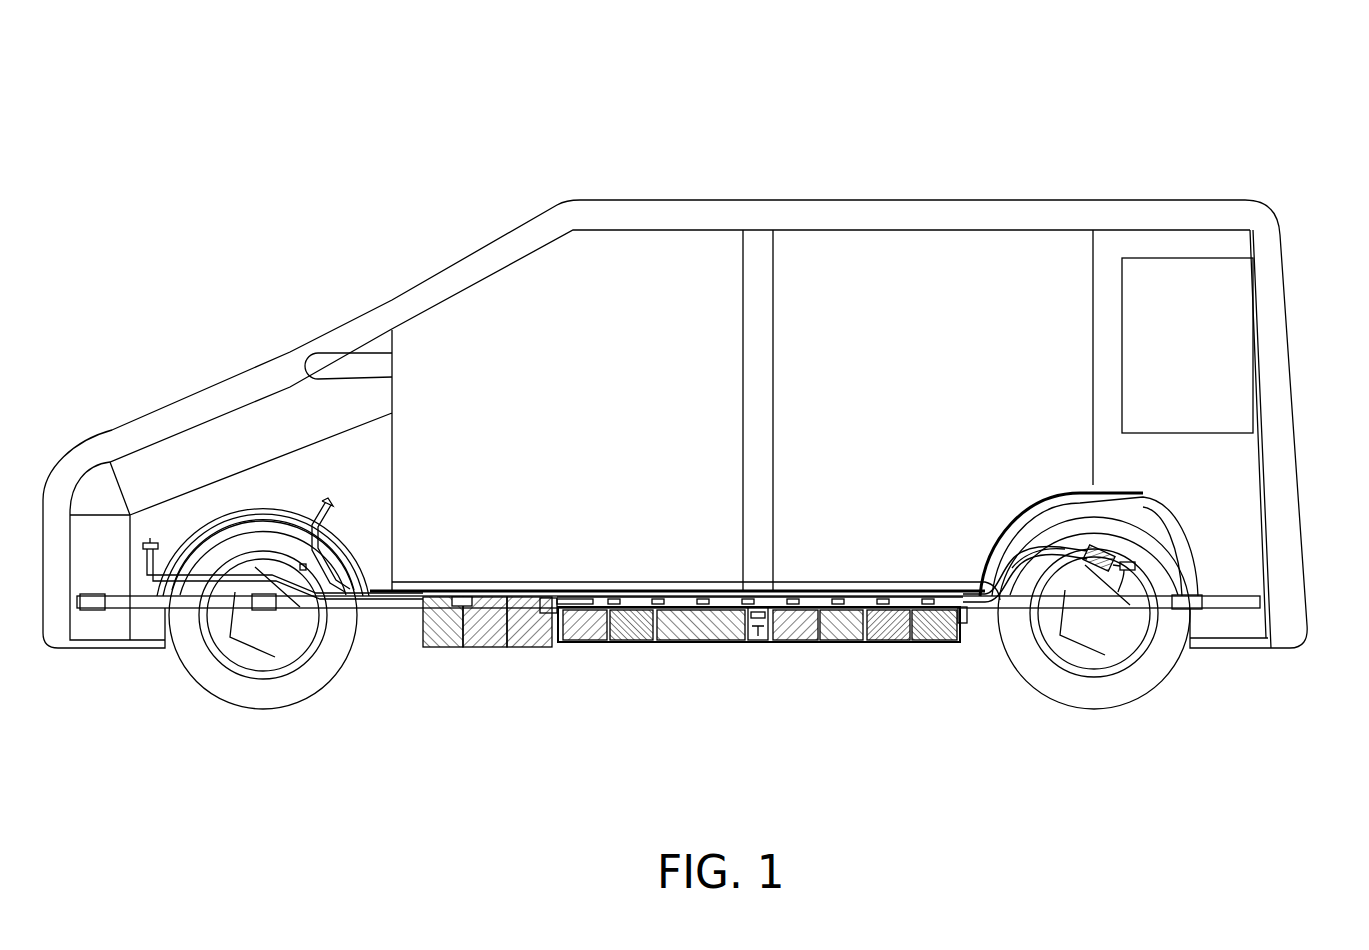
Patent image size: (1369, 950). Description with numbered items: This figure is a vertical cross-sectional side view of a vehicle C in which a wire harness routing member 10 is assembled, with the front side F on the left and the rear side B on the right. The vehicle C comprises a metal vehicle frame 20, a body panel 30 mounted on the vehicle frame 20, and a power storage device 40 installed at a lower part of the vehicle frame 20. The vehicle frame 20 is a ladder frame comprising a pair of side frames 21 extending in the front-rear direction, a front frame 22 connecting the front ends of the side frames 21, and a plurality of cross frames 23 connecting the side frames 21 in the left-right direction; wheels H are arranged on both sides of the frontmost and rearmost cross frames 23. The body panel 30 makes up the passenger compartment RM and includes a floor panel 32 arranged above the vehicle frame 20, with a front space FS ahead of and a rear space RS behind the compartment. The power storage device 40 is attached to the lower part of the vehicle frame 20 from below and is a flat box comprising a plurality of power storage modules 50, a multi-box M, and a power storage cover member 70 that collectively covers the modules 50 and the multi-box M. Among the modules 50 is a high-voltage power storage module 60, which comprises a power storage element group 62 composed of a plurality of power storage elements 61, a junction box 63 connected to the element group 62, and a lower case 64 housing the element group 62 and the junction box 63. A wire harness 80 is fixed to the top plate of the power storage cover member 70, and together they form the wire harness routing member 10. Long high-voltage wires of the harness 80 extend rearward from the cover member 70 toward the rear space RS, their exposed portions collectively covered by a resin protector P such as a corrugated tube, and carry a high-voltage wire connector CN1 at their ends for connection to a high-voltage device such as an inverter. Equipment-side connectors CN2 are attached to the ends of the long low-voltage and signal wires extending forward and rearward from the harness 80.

The wire harness routing member 10 is at (679, 608).
The vehicle frame 20 is at (147, 612).
The side frame 21 is at (288, 604).
The front frame 22 is at (88, 612).
The cross frame 23 is at (1183, 612).
The body panel 30 is at (675, 388).
The floor panel 32 is at (798, 597).
The power storage device 40 is at (762, 690).
The power storage module 50 is at (769, 695).
The high-voltage power storage module 60 is at (769, 695).
The power storage element 61 is at (976, 708).
The power storage element group 62 is at (874, 684).
The junction box 63 is at (758, 632).
The lower case 64 is at (629, 640).
The power storage cover member 70 is at (474, 659).
The wire harness 80 is at (988, 619).
The multi-box M is at (482, 625).
The wheel H is at (214, 680).
The resin protector P is at (1033, 553).
The vehicle C is at (675, 388).
The front side F is at (878, 32).
The rear side B is at (891, 33).
The front space FS is at (249, 444).
The rear space RS is at (1185, 455).
The passenger compartment RM is at (592, 385).
The high-voltage wire connector CN1 is at (1098, 554).
The equipment-side connector CN2 is at (154, 540).